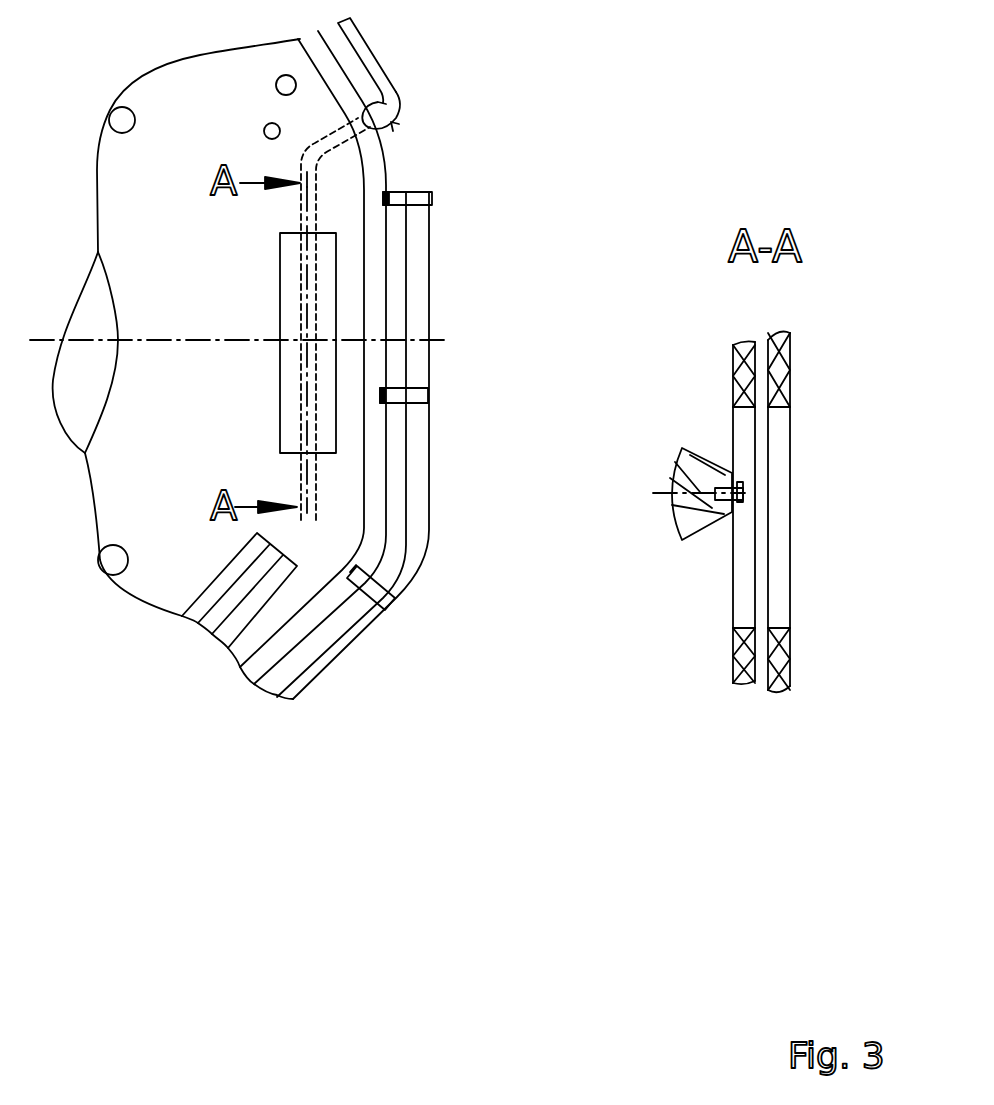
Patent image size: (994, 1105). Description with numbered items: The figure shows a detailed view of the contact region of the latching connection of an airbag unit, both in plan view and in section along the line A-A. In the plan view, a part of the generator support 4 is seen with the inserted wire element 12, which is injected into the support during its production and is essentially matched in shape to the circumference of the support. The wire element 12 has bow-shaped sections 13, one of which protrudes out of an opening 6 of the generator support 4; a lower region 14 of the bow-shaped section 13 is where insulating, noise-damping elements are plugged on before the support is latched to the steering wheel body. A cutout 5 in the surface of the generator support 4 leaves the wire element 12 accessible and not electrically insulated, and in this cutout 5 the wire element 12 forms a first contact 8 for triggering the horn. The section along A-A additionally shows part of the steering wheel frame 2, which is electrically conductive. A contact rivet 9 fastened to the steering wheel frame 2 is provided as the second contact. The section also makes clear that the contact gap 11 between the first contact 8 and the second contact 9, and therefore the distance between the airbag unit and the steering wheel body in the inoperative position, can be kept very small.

The steering wheel frame 2 is at (677, 516).
The generator support 4 is at (153, 424).
The cutout 5 is at (323, 328).
The opening 6 is at (386, 100).
The first contact 8 is at (317, 287).
The contact rivet 9 is at (740, 482).
The contact gap 11 is at (745, 493).
The wire element 12 is at (317, 212).
The bow-shaped section 13 is at (392, 125).
The lower region 14 is at (370, 50).